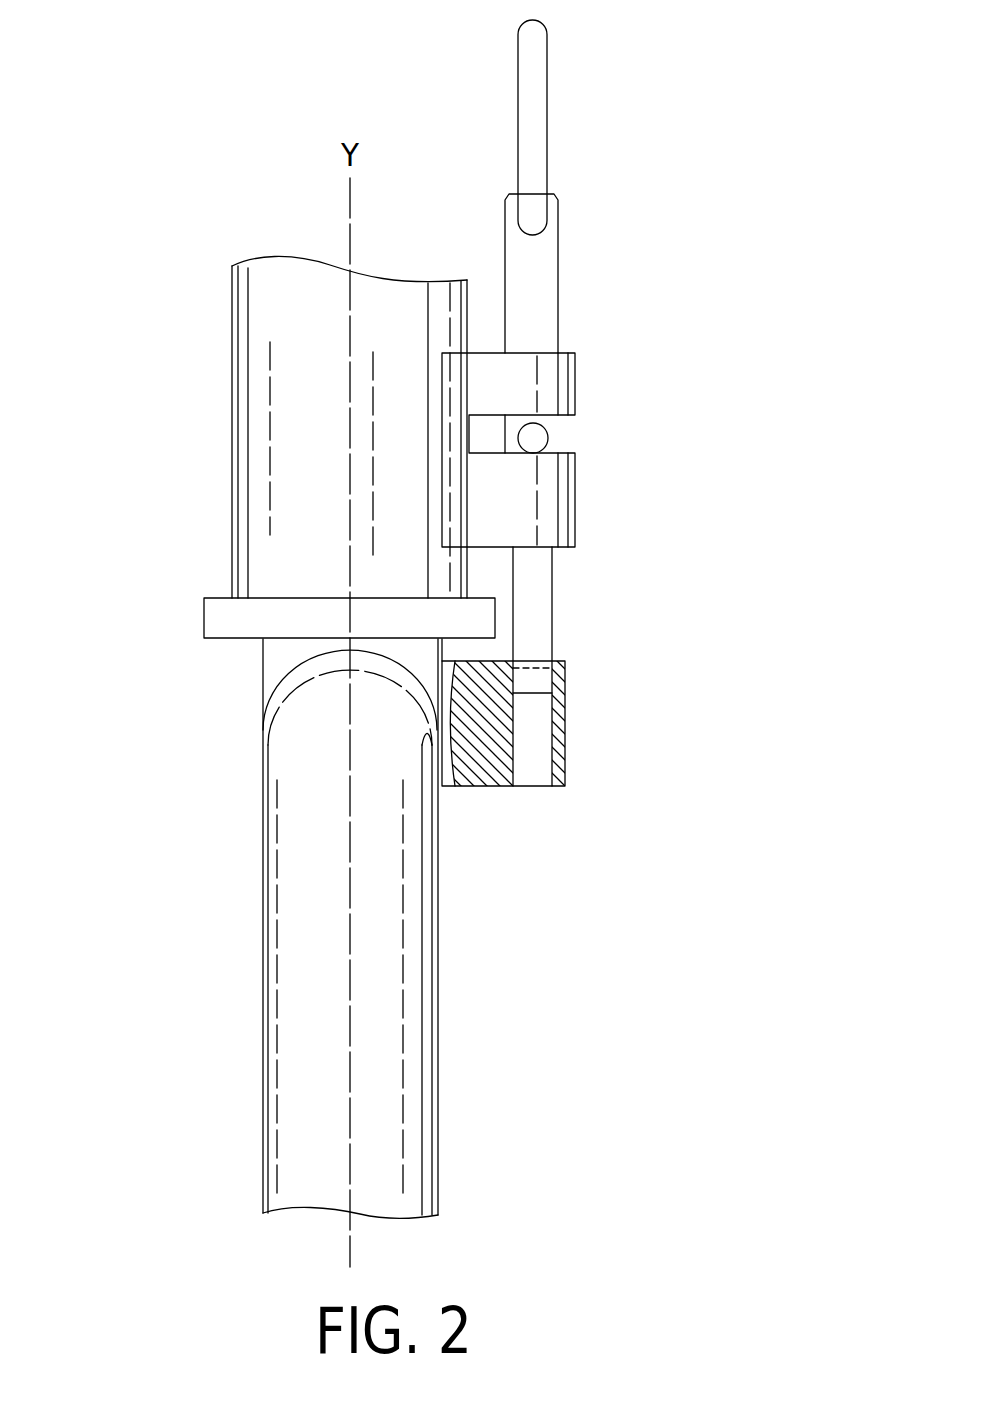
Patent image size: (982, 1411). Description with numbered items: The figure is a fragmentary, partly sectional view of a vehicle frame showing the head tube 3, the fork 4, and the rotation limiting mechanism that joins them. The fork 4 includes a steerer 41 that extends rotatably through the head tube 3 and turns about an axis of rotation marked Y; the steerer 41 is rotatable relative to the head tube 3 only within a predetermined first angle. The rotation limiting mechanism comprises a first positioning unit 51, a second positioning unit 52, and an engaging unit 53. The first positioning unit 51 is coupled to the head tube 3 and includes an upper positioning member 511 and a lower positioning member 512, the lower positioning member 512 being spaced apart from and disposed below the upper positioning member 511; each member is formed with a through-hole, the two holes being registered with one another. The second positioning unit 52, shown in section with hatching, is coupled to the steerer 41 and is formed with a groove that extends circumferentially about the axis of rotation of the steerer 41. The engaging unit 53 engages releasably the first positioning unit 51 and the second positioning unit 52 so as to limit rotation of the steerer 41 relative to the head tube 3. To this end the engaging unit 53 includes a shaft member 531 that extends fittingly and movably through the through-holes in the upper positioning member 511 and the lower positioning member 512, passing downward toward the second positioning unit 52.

The head tube 3 is at (247, 400).
The fork 4 is at (225, 968).
The steerer 41 is at (263, 675).
The first positioning unit 51 is at (630, 394).
The upper positioning member 511 is at (577, 358).
The lower positioning member 512 is at (577, 520).
The second positioning unit 52 is at (580, 722).
The engaging unit 53 is at (577, 251).
The shaft member 531 is at (552, 317).